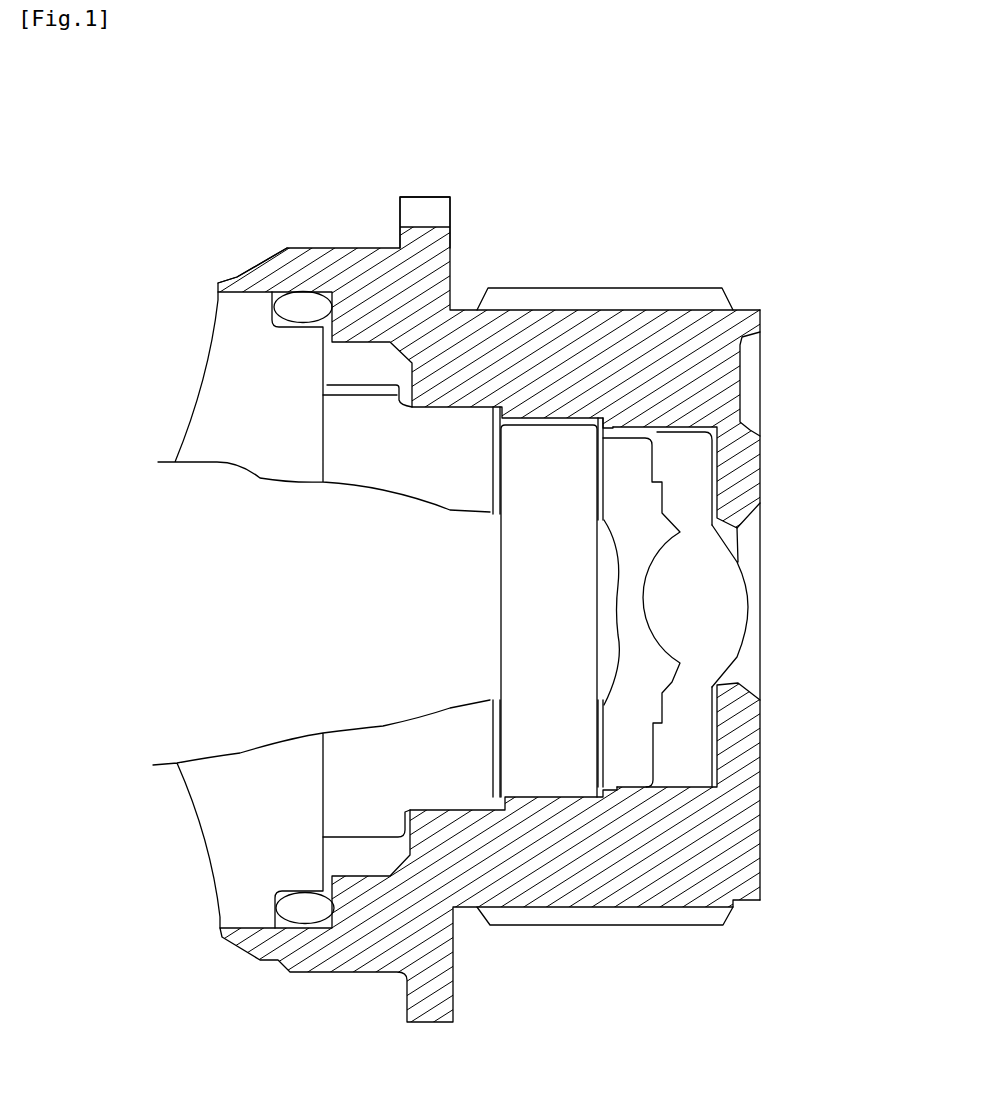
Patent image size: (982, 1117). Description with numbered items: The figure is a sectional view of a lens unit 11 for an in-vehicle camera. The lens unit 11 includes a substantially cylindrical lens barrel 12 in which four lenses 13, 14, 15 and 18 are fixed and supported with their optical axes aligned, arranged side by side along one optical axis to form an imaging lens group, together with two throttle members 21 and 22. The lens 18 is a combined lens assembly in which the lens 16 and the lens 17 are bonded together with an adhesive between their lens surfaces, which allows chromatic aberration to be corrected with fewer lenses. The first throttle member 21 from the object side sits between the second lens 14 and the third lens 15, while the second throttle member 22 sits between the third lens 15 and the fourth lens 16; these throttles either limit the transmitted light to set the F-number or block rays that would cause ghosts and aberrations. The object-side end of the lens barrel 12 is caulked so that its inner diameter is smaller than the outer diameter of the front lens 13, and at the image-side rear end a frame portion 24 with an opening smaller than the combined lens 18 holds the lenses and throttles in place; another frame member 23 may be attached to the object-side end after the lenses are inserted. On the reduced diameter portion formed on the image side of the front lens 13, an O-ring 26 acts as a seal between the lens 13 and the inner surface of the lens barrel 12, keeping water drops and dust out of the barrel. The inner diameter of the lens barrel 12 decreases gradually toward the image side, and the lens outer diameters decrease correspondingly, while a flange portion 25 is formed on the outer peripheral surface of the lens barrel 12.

The lens unit 11 is at (307, 255).
The lens barrel 12 is at (611, 321).
The lens 13 is at (250, 917).
The lens 14 is at (437, 792).
The lens 15 is at (556, 778).
The lens 16 is at (617, 765).
The lens 17 is at (680, 767).
The combined lens 18 is at (697, 763).
The first throttle member 21 is at (491, 728).
The second throttle member 22 is at (600, 722).
The frame member 23 is at (240, 274).
The frame portion 24 is at (761, 500).
The flange portion 25 is at (452, 235).
The O-ring 26 is at (294, 304).